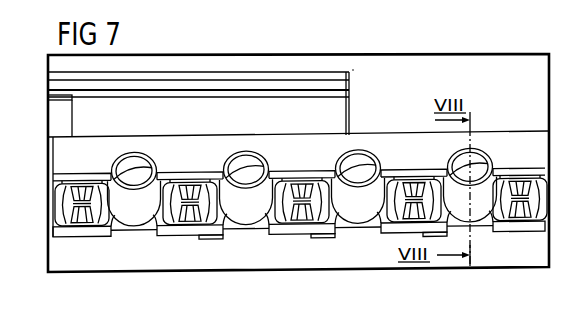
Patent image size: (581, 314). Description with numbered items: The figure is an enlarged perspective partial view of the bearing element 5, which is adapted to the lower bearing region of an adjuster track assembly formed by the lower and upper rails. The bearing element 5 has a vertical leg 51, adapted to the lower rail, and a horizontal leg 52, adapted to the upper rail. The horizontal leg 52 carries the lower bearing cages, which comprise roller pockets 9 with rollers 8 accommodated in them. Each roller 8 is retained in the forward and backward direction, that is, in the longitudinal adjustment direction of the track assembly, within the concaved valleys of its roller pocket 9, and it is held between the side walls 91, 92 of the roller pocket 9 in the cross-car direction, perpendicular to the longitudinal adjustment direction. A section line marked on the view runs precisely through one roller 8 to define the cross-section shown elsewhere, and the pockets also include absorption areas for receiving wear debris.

The bearing element 5 is at (520, 123).
The vertical leg 51 is at (333, 112).
The horizontal leg 52 is at (403, 146).
The roller 8 is at (245, 212).
The roller pocket 9 is at (139, 248).
The side wall 91 is at (127, 236).
The side wall 92 is at (116, 170).